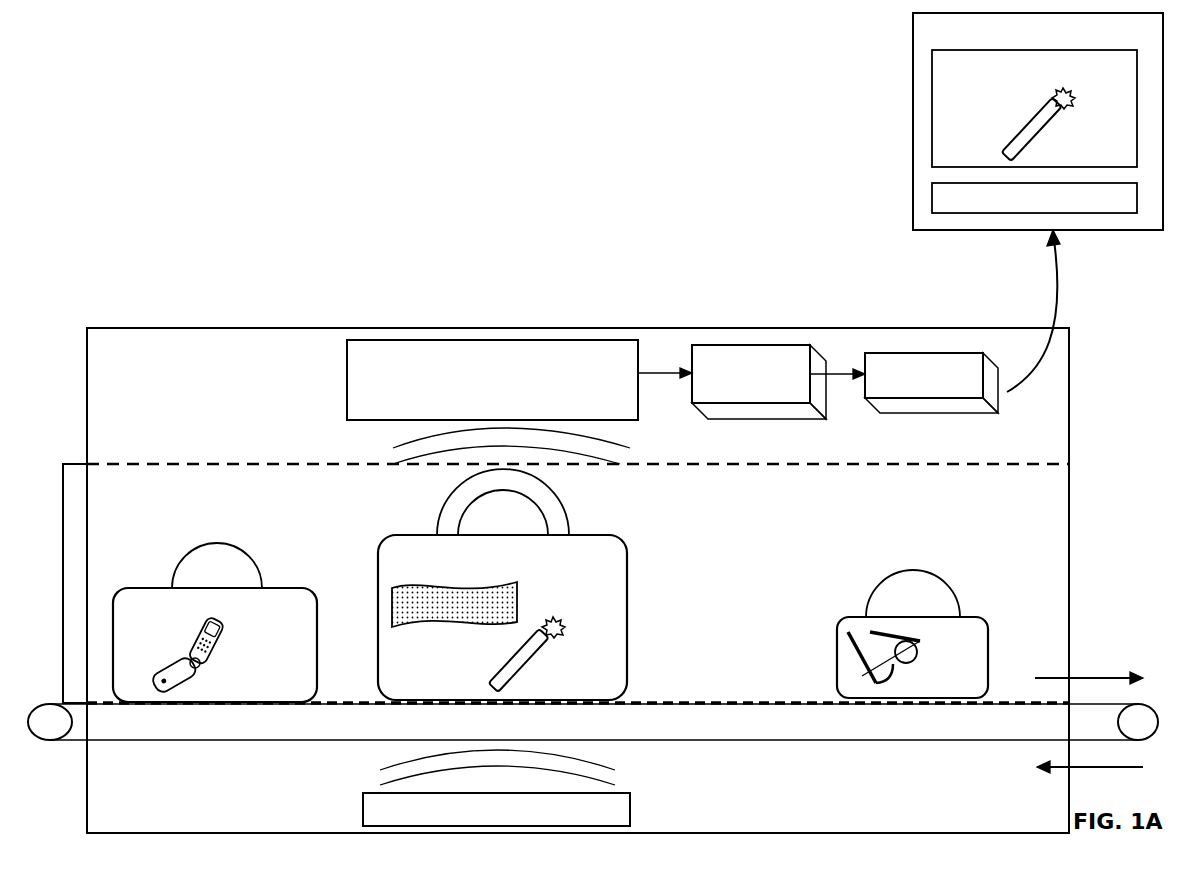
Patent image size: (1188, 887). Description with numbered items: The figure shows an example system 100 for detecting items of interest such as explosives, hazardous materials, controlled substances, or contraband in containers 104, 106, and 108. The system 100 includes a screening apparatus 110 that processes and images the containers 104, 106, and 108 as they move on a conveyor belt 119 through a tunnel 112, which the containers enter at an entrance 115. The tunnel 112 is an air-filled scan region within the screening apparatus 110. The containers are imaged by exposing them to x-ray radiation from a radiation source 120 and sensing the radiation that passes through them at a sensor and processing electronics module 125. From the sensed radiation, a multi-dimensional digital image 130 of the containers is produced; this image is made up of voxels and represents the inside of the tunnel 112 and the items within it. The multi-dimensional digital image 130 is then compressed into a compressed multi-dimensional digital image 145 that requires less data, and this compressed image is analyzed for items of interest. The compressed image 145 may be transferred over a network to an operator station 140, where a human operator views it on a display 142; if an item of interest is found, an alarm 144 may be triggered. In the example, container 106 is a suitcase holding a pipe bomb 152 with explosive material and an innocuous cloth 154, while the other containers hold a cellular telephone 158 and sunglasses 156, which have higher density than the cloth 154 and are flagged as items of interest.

The system 100 is at (530, 56).
The screening apparatus 110 is at (172, 290).
The tunnel 112 is at (190, 463).
The entrance 115 is at (78, 462).
The conveyor belt 119 is at (47, 745).
The radiation source 120 is at (625, 815).
The sensor and processing electronics module 125 is at (492, 402).
The multi-dimensional digital image 130 is at (752, 404).
The operator station 140 is at (913, 100).
The display 142 is at (1034, 108).
The alarm 144 is at (1034, 198).
The compressed multi-dimensional digital image 145 is at (1000, 412).
The container 104 is at (290, 590).
The container 106 is at (628, 566).
The container 108 is at (992, 645).
The pipe bomb 152 is at (545, 672).
The cloth 154 is at (487, 583).
The sunglasses 156 is at (918, 647).
The cellular telephone 158 is at (207, 655).